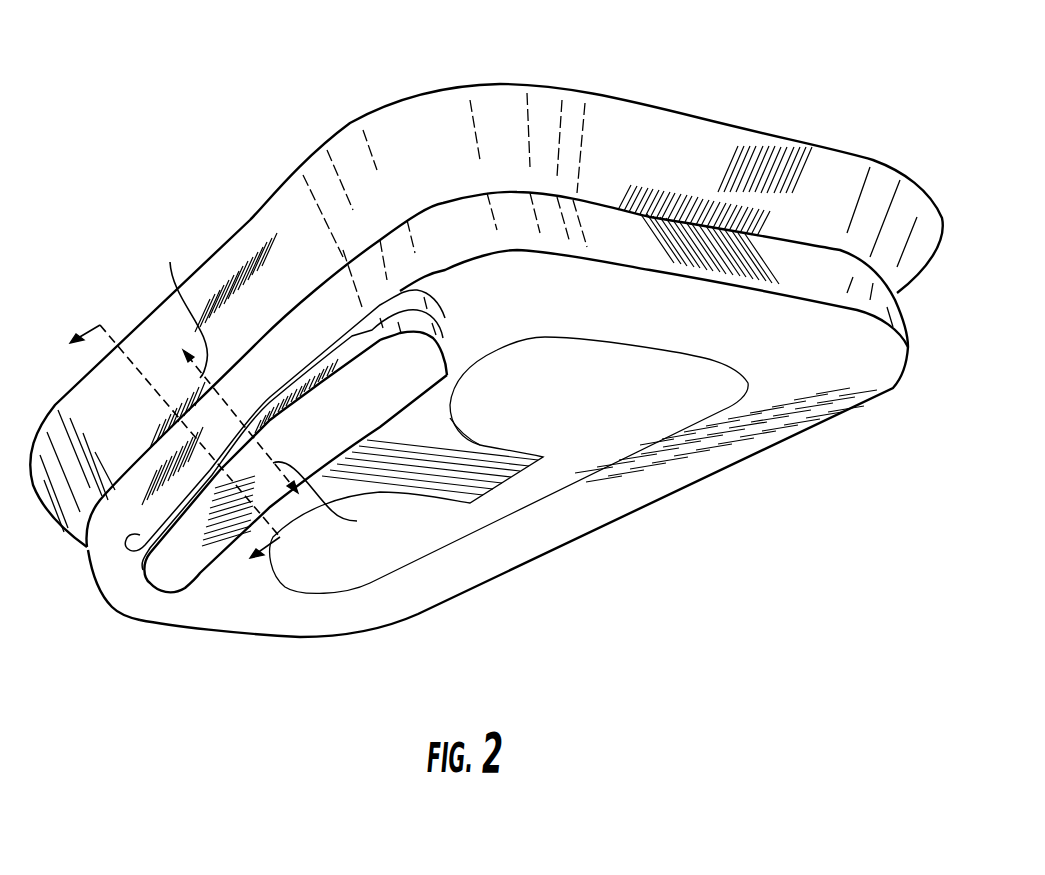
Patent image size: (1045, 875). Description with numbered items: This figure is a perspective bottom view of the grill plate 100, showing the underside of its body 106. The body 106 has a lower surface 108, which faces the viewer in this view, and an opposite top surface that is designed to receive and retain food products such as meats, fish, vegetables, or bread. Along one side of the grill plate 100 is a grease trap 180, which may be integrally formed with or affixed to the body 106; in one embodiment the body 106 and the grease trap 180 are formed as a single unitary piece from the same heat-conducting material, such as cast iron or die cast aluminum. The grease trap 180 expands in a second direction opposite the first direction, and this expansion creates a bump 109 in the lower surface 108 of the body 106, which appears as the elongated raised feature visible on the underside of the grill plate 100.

The grill plate 100 is at (165, 84).
The body 106 is at (907, 348).
The lower surface 108 is at (504, 555).
The bump 109 is at (177, 582).
The grease trap 180 is at (118, 604).